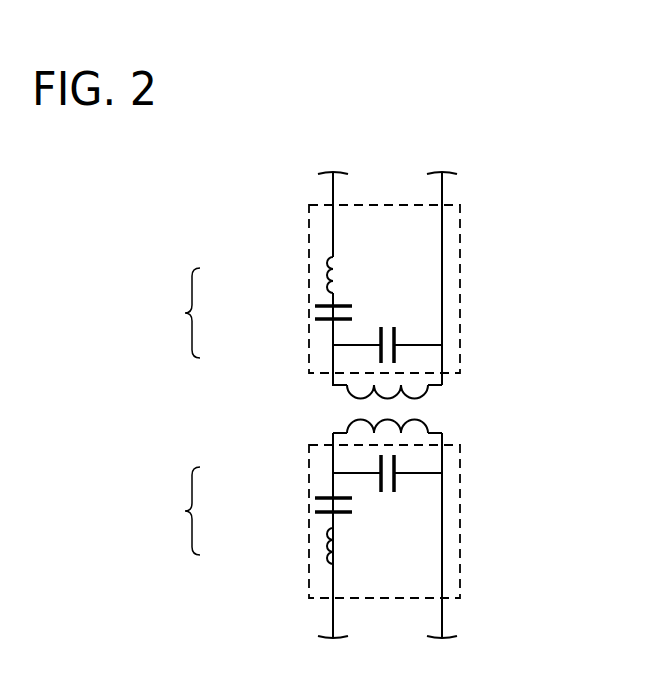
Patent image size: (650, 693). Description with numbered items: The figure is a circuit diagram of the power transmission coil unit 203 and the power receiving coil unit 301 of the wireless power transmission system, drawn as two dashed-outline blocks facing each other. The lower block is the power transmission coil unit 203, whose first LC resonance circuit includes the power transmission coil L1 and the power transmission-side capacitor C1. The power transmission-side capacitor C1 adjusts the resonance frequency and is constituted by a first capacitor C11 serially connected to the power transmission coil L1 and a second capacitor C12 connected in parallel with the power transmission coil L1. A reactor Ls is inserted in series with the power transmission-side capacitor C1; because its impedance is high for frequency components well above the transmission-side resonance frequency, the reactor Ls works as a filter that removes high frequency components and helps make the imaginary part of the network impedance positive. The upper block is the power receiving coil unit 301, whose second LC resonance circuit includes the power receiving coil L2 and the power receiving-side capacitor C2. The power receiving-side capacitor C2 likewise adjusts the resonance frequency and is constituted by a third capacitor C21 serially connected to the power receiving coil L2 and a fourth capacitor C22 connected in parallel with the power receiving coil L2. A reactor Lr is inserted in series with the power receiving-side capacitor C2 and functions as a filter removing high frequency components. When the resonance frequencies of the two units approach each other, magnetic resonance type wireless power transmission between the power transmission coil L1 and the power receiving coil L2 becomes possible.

The power receiving coil unit 301 is at (292, 238).
The power transmission coil unit 203 is at (295, 468).
The reactor Lr is at (335, 270).
The power receiving-side capacitor C2 is at (175, 313).
The third capacitor C21 is at (315, 303).
The fourth capacitor C22 is at (383, 330).
The power receiving coil L2 is at (425, 398).
The power transmission coil L1 is at (425, 419).
The power transmission-side capacitor C1 is at (175, 511).
The second capacitor C12 is at (372, 480).
The first capacitor C11 is at (318, 515).
The reactor Ls is at (332, 543).